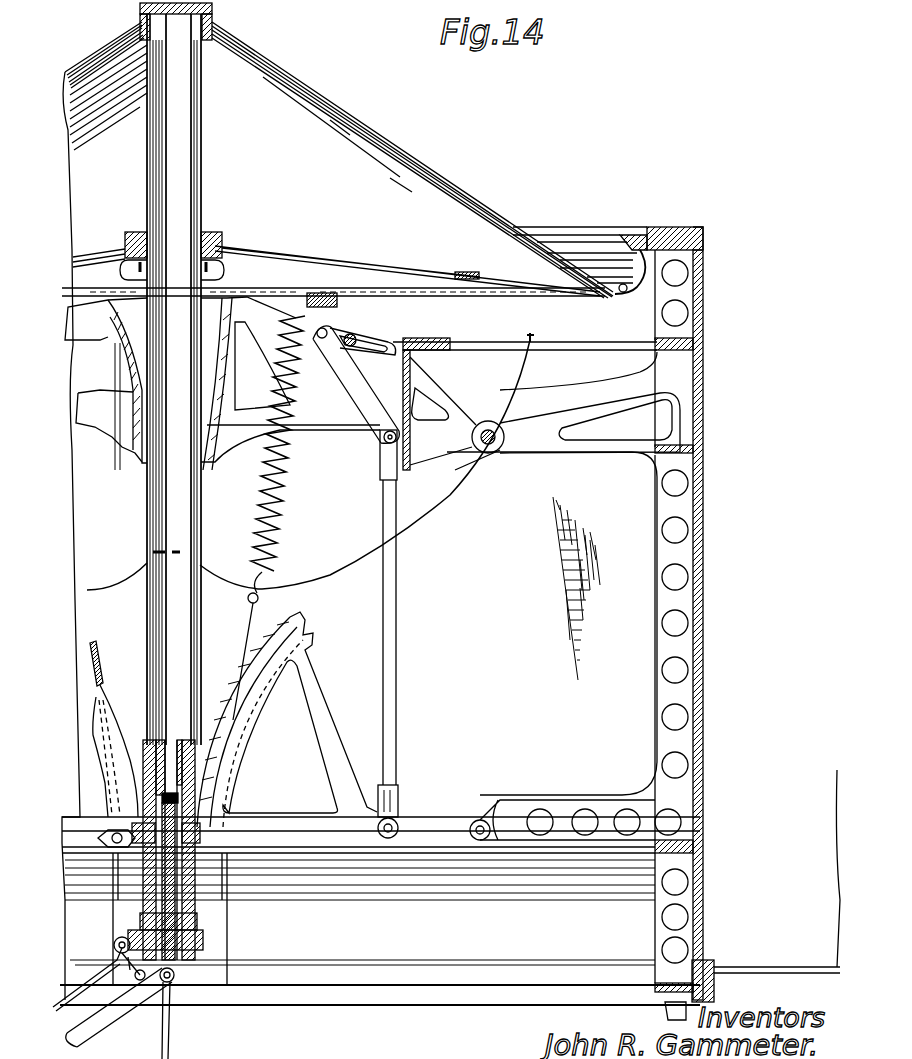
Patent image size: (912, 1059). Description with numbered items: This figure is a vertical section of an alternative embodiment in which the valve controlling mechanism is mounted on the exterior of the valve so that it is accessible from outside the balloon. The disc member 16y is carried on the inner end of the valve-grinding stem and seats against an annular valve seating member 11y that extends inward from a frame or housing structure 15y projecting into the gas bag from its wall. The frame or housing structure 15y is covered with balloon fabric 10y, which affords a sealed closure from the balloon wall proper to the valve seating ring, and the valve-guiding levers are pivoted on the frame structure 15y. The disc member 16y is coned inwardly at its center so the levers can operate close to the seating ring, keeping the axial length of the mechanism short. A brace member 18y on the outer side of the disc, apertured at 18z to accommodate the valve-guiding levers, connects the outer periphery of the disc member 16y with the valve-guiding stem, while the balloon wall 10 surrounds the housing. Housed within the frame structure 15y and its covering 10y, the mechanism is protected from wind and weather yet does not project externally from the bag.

The disc member 16y is at (357, 120).
The annular valve seating member 11y is at (653, 227).
The aperture 18z is at (223, 268).
The brace member 18y is at (473, 277).
The frame or housing structure 15y is at (670, 653).
The balloon fabric 10y is at (706, 708).
The base 10 is at (790, 972).